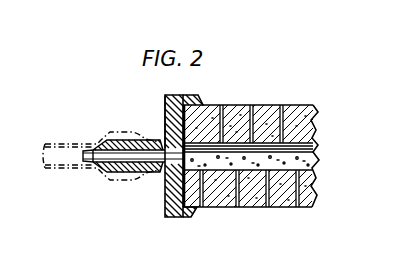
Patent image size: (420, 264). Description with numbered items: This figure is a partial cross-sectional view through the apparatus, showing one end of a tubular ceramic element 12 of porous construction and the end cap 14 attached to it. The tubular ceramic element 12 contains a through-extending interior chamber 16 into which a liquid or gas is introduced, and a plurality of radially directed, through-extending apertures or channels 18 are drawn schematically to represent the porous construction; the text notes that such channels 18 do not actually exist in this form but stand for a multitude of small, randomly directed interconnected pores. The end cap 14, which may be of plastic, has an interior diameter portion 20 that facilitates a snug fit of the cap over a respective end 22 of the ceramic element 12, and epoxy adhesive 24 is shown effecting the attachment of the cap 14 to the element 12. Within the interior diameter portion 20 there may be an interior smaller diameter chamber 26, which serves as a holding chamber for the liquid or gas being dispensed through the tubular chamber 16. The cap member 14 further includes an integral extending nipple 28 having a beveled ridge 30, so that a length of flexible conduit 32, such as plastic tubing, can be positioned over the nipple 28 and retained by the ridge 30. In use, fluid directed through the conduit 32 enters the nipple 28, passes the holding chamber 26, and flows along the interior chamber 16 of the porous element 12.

The tubular ceramic element 12 is at (279, 105).
The end cap 14 is at (172, 218).
The interior chamber 16 is at (312, 153).
The apertures or channels 18 is at (284, 121).
The interior diameter portion 20 is at (215, 106).
The end of ceramic element 22 is at (199, 197).
The epoxy adhesive 24 is at (204, 213).
The interior smaller diameter chamber 26 is at (164, 112).
The nipple 28 is at (141, 173).
The beveled ridge 30 is at (107, 176).
The flexible conduit 32 is at (62, 142).